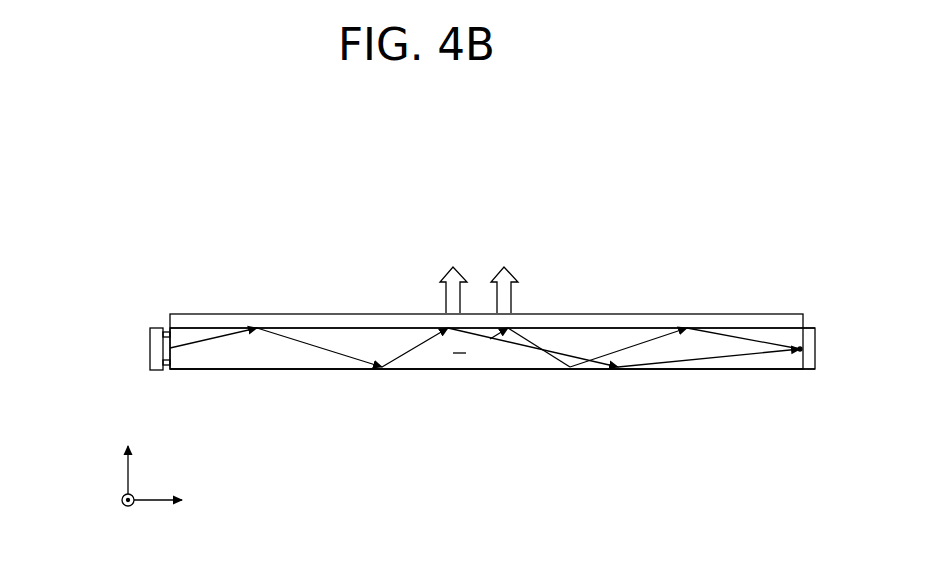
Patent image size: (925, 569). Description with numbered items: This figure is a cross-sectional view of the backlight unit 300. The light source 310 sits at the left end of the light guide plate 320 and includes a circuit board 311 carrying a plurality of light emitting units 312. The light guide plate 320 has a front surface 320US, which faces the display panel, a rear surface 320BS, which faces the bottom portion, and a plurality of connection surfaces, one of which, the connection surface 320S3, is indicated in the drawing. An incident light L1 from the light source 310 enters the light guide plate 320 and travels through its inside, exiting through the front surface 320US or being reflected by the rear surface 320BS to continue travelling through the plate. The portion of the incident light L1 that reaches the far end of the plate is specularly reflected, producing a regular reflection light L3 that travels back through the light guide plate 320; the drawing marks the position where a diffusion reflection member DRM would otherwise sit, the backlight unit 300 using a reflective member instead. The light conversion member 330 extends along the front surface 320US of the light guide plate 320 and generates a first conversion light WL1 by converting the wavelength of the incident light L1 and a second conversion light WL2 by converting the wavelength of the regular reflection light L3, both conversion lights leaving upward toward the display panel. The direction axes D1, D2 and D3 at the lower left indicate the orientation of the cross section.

The backlight unit 300 is at (628, 221).
The light source 310 is at (99, 351).
The circuit board 311 is at (150, 355).
The light emitting units 312 is at (152, 344).
The light guide plate 320 is at (302, 362).
The light conversion member 330 is at (218, 320).
The front surface 320US is at (327, 328).
The rear surface 320BS is at (533, 370).
The connection surface 320S3 is at (458, 354).
The incident light L1 is at (215, 339).
The regular reflection light L3 is at (643, 343).
The first conversion light WL1 is at (451, 278).
The second conversion light WL2 is at (504, 278).
The diffusion reflection member DRM is at (808, 368).
The first direction D1 is at (173, 501).
The second direction D2 is at (114, 512).
The third direction D3 is at (129, 455).